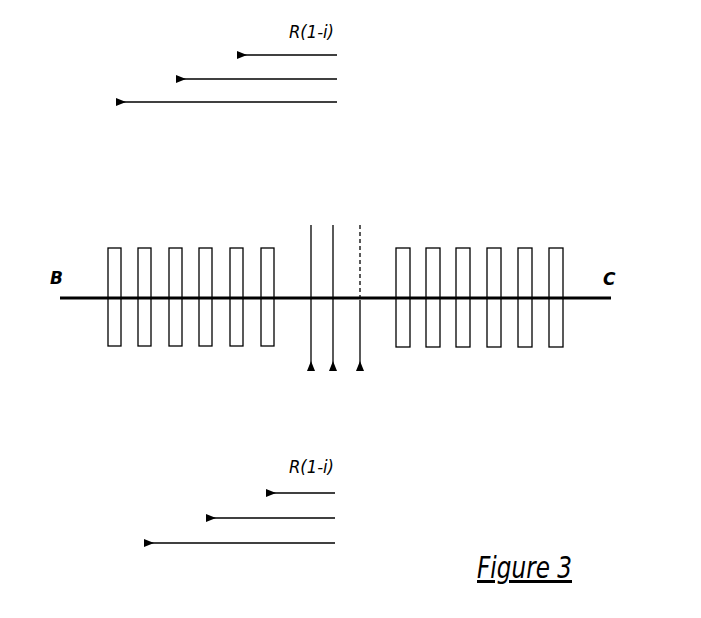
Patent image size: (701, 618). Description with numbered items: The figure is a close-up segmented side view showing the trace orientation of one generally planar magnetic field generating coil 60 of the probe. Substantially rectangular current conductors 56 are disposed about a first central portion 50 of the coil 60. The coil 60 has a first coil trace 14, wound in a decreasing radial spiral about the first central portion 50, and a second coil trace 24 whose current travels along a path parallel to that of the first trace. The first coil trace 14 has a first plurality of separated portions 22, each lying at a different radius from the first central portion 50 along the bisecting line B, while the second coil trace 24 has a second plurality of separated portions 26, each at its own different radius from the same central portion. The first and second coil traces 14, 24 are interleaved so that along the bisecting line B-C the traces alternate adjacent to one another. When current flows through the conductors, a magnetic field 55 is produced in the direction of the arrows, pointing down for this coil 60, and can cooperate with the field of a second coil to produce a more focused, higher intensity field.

The first coil trace 14 is at (175, 309).
The second coil trace 24 is at (206, 309).
The first plurality of separated portions 22 is at (175, 251).
The second plurality of separated portions 26 is at (206, 360).
The first central portion 50 is at (347, 268).
The magnetic field 55 is at (365, 349).
The substantially rectangular current conductors 56 is at (553, 343).
The first generally planar magnetic field generating coil 60 is at (104, 326).